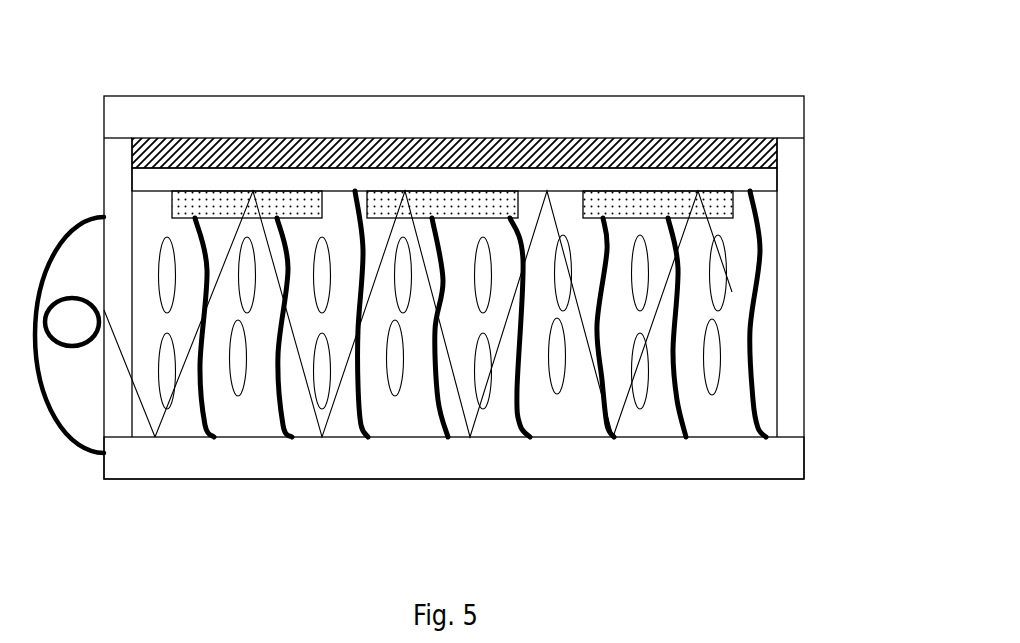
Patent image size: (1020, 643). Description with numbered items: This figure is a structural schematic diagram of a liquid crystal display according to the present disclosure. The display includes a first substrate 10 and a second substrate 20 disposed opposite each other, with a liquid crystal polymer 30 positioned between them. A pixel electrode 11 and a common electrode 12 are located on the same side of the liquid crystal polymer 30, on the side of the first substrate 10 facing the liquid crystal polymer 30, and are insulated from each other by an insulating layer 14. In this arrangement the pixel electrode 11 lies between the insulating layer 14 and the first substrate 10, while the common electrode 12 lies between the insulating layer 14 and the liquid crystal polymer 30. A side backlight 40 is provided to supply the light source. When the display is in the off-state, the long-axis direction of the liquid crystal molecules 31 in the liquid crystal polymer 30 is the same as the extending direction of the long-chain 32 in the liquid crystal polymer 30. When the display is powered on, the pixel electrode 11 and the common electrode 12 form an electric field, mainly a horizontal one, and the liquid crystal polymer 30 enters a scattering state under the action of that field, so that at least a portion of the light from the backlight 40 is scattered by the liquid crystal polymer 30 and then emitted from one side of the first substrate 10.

The first substrate 10 is at (454, 249).
The pixel electrode 11 is at (454, 93).
The common electrode 12 is at (429, 105).
The insulating layer 14 is at (491, 120).
The second substrate 20 is at (454, 487).
The liquid crystal polymer 30 is at (542, 314).
The liquid crystal molecules 31 is at (738, 293).
The long-chain 32 is at (753, 354).
The side backlight 40 is at (52, 253).